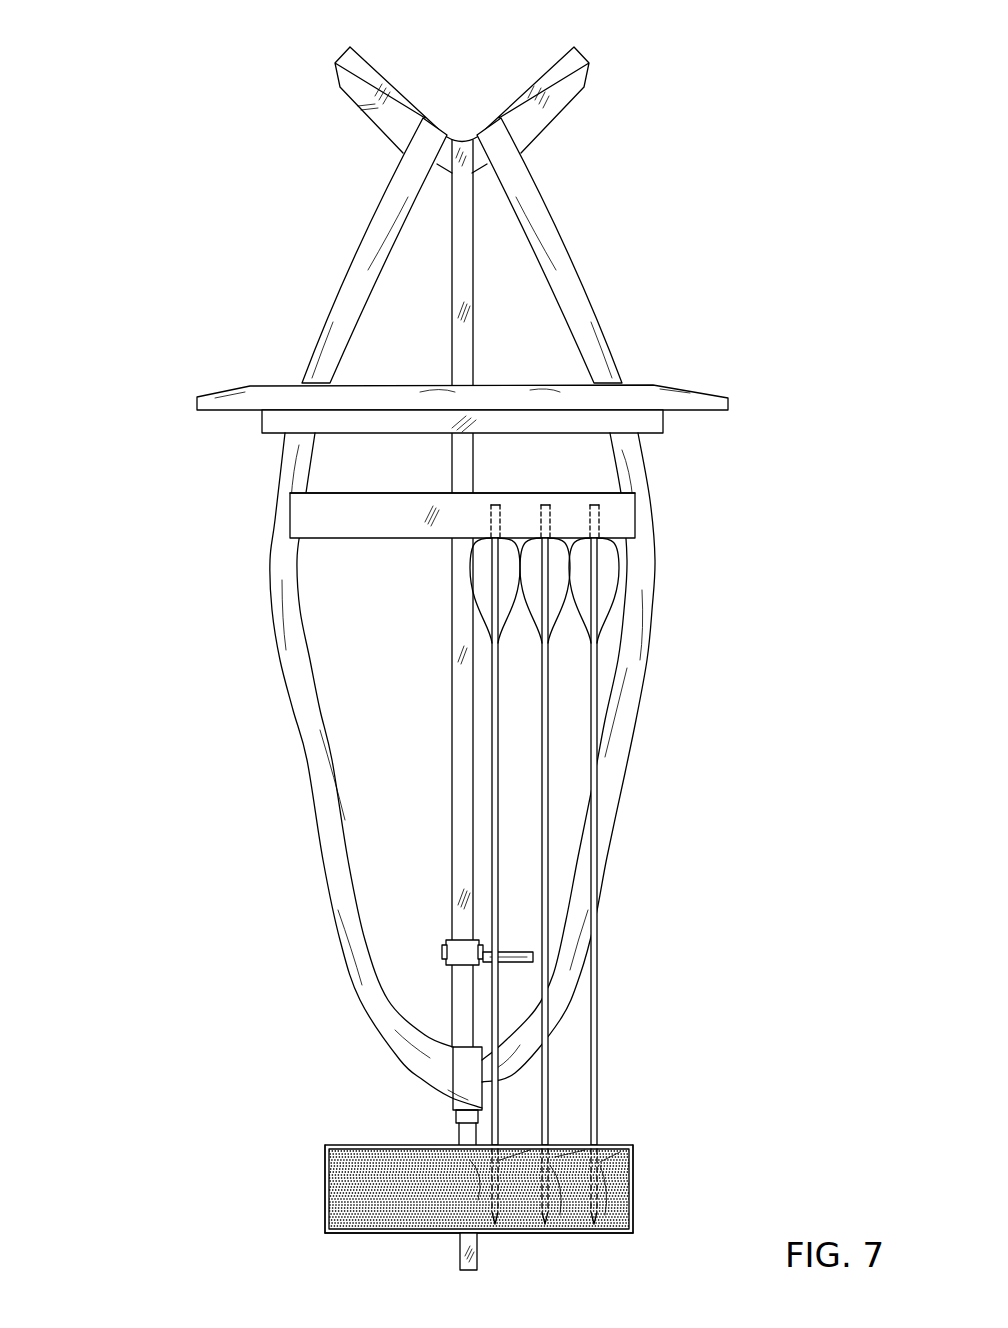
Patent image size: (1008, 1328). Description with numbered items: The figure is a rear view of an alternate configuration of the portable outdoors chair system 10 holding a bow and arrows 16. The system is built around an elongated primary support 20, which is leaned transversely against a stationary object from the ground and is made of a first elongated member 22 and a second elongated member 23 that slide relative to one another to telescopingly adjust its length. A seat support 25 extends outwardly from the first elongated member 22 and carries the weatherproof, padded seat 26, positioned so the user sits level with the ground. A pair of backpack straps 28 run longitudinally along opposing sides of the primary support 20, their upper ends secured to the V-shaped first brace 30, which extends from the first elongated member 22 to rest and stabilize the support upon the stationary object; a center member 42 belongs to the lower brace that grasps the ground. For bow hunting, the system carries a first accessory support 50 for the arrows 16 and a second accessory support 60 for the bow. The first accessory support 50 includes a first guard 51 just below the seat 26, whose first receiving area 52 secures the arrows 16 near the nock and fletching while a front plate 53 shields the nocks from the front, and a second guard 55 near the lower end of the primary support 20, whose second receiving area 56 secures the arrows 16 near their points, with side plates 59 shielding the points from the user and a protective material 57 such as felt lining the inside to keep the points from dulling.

The portable outdoors chair system 10 is at (140, 162).
The arrows 16 is at (590, 1000).
The primary support 20 is at (440, 702).
The first elongated member 22 is at (452, 770).
The second elongated member 23 is at (457, 1133).
The seat support 25 is at (663, 420).
The seat 26 is at (652, 385).
The straps 28 is at (342, 283).
The first brace 30 is at (372, 66).
The center member 42 is at (478, 1257).
The first accessory support 50 is at (648, 1188).
The first guard 51 is at (390, 540).
The first receiving area 52 is at (570, 515).
The front plate 53 is at (400, 507).
The second guard 55 is at (582, 1230).
The second receiving area 56 is at (588, 1150).
The protective material 57 is at (353, 1210).
The side plates 59 is at (325, 1200).
The second accessory support 60 is at (445, 926).